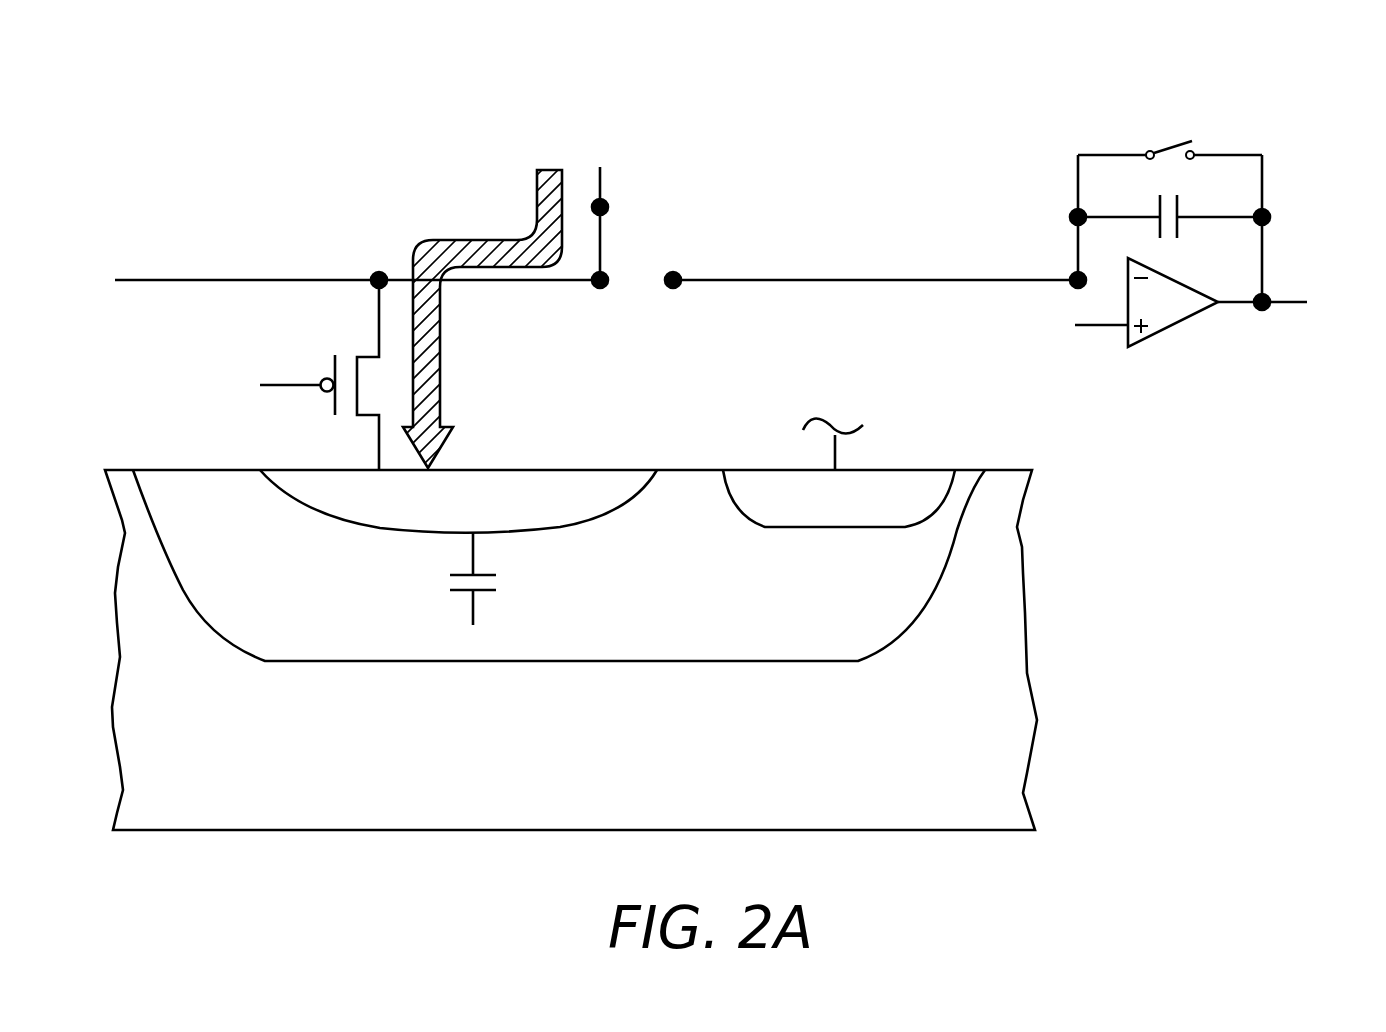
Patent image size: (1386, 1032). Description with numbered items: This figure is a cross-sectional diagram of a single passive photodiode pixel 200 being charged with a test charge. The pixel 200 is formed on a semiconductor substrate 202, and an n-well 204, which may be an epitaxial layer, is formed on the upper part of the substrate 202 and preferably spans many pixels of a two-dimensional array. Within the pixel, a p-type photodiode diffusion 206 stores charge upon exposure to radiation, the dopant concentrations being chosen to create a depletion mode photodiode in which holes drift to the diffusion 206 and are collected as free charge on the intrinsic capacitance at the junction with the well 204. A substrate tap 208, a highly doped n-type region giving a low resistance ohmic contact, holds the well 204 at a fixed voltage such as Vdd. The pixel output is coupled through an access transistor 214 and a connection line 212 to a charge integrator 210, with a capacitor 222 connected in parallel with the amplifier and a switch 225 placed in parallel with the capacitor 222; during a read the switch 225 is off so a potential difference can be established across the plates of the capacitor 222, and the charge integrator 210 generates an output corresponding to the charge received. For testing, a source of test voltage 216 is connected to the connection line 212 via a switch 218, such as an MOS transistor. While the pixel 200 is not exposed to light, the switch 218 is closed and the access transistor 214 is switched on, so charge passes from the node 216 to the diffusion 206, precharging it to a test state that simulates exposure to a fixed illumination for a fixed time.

The pixel 200 is at (975, 168).
The semiconductor substrate 202 is at (608, 798).
The n-well 204 is at (788, 595).
The photodiode diffusion 206 is at (453, 478).
The substrate tap 208 is at (947, 503).
The charge integrator 210 is at (1172, 313).
The connection line 212 is at (867, 278).
The access transistor 214 is at (342, 345).
The source of test voltage 216 is at (604, 205).
The switch 218 is at (600, 248).
The capacitor 222 is at (1187, 207).
The switch 225 is at (1168, 140).